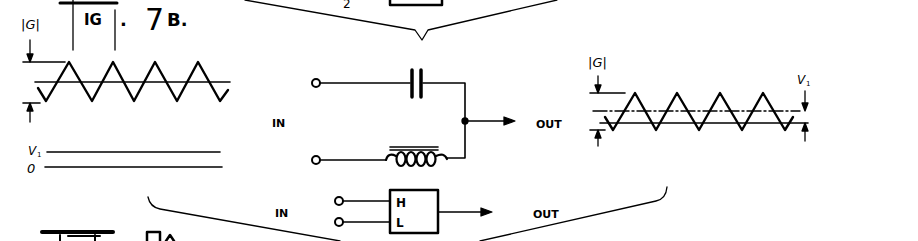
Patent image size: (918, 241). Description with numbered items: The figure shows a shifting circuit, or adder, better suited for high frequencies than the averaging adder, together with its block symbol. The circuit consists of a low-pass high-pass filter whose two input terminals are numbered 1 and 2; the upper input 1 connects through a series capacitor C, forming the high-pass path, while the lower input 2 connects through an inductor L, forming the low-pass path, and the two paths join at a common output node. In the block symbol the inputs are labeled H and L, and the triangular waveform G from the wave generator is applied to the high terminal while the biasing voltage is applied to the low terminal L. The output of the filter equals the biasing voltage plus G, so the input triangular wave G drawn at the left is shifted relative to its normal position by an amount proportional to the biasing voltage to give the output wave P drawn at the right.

The triangular waveform input voltage G is at (157, 72).
The output voltage P is at (725, 100).
The capacitor C is at (426, 73).
The low-frequency input terminal L is at (418, 147).
The input terminal 1 is at (348, 199).
The input terminal 2 is at (332, 198).